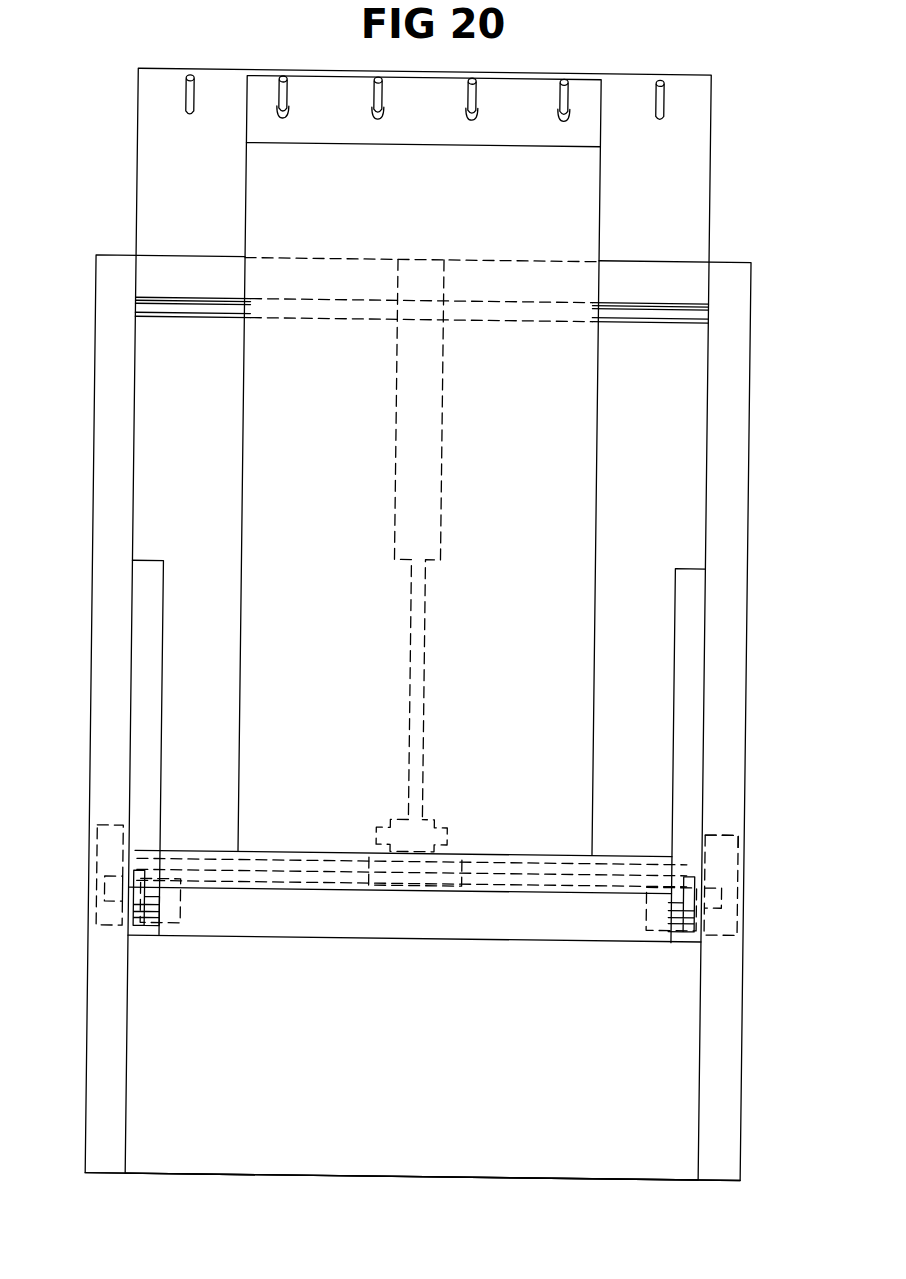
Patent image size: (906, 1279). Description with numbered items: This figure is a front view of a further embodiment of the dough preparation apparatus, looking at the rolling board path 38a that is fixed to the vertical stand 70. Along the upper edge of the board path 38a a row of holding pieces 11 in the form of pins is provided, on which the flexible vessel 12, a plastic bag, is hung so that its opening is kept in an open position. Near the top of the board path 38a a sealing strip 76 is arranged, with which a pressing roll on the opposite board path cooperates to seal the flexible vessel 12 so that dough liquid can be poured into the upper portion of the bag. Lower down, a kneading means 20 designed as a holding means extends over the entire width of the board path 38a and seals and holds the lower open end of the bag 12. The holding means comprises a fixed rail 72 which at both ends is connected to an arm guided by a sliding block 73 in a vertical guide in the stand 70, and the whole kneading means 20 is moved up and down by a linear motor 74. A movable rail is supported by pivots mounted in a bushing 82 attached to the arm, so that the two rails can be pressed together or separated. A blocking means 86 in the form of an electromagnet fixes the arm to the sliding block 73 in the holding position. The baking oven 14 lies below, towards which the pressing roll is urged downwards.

The holding pieces 11 is at (372, 101).
The flexible vessel 12 is at (568, 459).
The baking oven 14 is at (397, 1082).
The kneading means 20 is at (451, 898).
The rolling board path 38a is at (669, 524).
The vertical stand 70 is at (111, 482).
The fixed rail 72 is at (347, 874).
The sliding block 73 is at (738, 835).
The linear motor 74 is at (433, 420).
The sealing strip 76 is at (685, 302).
The bushing 82 is at (128, 854).
The blocking means 86 is at (154, 929).